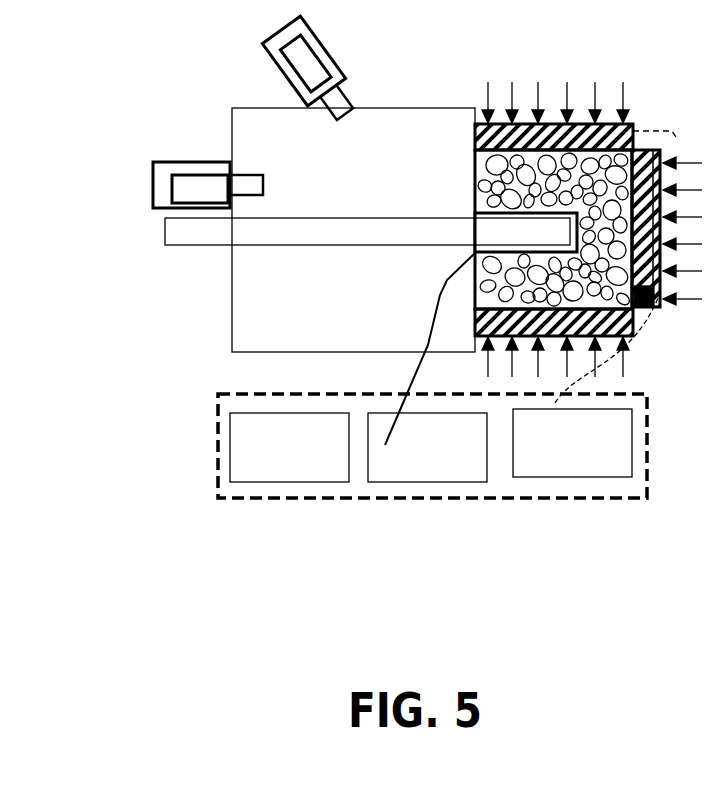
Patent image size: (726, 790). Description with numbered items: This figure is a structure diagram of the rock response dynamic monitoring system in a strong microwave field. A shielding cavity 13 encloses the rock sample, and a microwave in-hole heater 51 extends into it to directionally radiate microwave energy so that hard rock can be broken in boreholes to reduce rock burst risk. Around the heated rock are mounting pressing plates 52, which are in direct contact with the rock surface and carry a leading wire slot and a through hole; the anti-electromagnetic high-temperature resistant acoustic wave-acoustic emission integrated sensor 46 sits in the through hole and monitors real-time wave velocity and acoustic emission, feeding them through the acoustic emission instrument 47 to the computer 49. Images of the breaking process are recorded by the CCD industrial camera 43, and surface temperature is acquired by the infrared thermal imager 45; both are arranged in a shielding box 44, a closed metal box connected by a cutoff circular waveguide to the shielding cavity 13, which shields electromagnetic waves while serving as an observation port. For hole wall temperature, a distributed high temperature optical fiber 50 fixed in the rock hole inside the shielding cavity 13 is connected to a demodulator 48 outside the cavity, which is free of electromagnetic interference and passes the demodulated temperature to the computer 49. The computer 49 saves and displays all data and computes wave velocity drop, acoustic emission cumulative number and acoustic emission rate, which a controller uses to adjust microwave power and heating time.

The shielding cavity 13 is at (248, 263).
The CCD industrial camera 43 is at (188, 193).
The shielding box 44 is at (273, 48).
The infrared thermal imager 45 is at (313, 65).
The anti-electromagnetic high-temperature resistant acoustic wave-acoustic emission 46 is at (647, 293).
The acoustic emission instrument 47 is at (590, 452).
The demodulator 48 is at (432, 455).
The computer 49 is at (288, 468).
The distributed high temperature optical fiber 50 is at (430, 342).
The microwave in-hole heater 51 is at (182, 232).
The mounting pressing plate 52 is at (568, 130).